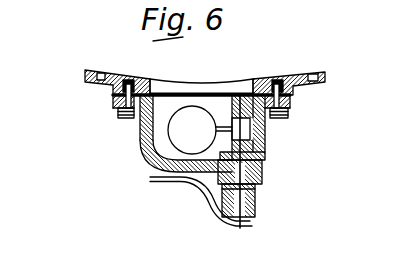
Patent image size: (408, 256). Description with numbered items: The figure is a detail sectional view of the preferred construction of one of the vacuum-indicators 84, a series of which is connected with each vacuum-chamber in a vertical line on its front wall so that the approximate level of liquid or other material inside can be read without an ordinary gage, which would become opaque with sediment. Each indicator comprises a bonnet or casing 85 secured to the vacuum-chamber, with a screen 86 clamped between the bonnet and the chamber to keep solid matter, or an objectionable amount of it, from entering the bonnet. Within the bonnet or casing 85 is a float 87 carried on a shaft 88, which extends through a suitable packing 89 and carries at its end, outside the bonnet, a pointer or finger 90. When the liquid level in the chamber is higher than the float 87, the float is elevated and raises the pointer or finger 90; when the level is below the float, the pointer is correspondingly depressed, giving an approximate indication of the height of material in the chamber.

The indicator 84 is at (289, 111).
The bonnet or casing 85 is at (126, 116).
The screen 86 is at (201, 91).
The float 87 is at (209, 130).
The shaft 88 is at (263, 157).
The packing 89 is at (253, 161).
The pointer or finger 90 is at (201, 201).